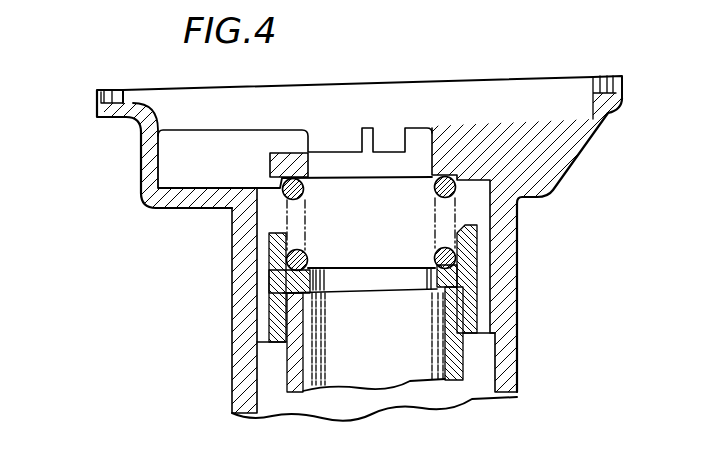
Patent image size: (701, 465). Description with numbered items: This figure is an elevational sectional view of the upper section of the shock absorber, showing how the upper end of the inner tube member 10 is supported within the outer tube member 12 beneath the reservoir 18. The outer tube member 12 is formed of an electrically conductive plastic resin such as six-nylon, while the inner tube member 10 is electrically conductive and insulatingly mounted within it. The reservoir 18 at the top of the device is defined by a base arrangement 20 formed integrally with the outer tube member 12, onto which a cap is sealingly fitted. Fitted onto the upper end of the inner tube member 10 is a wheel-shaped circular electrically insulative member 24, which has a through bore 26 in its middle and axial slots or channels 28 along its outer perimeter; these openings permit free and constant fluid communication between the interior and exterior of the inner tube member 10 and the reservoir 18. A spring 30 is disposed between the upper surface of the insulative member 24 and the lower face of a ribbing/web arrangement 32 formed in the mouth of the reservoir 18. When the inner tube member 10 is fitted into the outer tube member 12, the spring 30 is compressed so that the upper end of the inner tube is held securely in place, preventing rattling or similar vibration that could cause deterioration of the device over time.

The inner tube member 10 is at (295, 362).
The outer tube member 12 is at (240, 388).
The reservoir 18 is at (408, 88).
The base arrangement 20 is at (141, 155).
The wheel-shaped circular electrically insulative member 24 is at (282, 285).
The through bore 26 is at (340, 284).
The axial slots or channels 28 is at (263, 258).
The spring 30 is at (283, 212).
The ribbing/web arrangement 32 is at (493, 137).